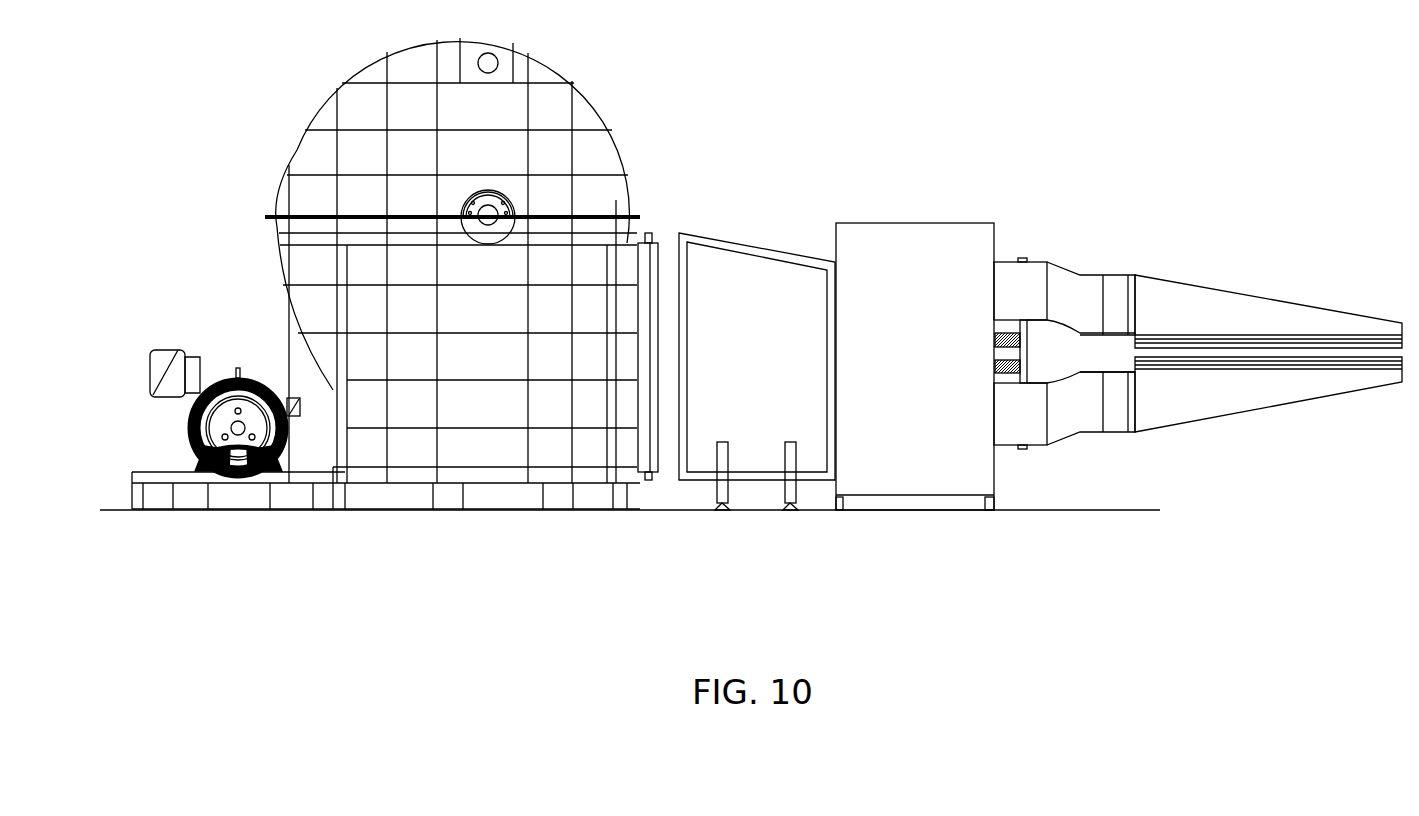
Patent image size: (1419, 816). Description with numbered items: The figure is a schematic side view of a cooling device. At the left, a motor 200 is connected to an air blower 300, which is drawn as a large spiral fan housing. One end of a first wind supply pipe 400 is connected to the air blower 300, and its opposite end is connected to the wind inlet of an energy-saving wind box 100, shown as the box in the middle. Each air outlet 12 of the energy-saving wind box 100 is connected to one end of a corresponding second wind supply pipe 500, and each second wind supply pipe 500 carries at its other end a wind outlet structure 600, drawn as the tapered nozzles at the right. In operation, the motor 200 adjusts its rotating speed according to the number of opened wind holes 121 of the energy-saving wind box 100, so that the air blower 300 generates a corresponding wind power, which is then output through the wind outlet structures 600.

The energy-saving wind box 100 is at (931, 216).
The air outlet 12 is at (1011, 258).
The wind hole 121 is at (1012, 291).
The motor 200 is at (217, 376).
The air blower 300 is at (316, 104).
The first wind supply pipe 400 is at (716, 252).
The second wind supply pipe 500 is at (1073, 266).
The wind outlet structure 600 is at (1223, 296).